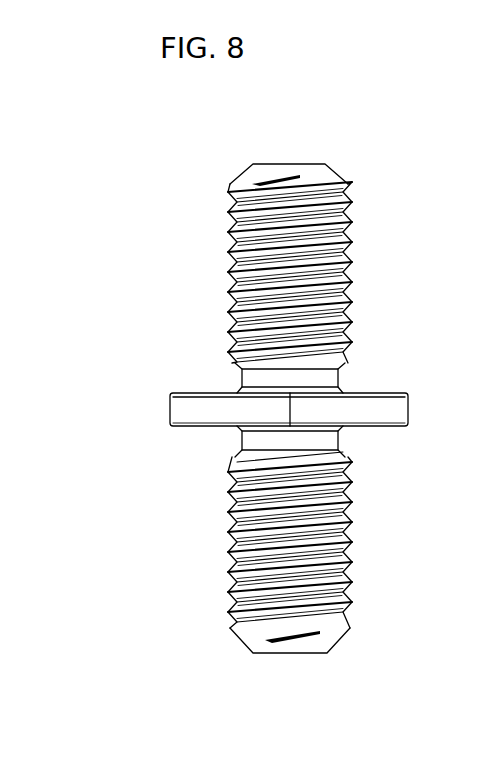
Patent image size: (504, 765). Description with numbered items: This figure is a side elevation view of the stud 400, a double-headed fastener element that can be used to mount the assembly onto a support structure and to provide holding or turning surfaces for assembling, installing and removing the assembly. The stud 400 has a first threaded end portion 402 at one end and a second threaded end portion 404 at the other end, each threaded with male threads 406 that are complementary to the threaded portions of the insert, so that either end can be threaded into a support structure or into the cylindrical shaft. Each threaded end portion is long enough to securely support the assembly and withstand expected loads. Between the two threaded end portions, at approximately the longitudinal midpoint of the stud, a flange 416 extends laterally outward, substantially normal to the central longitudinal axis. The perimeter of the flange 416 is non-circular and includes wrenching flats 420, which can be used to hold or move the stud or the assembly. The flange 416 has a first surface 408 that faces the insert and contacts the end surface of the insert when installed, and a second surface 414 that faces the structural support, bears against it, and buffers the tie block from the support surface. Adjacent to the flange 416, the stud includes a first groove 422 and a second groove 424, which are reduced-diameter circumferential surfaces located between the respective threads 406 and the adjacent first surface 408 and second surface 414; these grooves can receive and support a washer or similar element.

The stud 400 is at (268, 152).
The first threaded end portion 402 is at (310, 267).
The second threaded end portion 404 is at (305, 597).
The male threads 406 is at (233, 230).
The first surface 408 is at (383, 392).
The second surface 414 is at (378, 426).
The flange 416 is at (160, 408).
The wrenching flats 420 is at (383, 407).
The first groove 422 is at (230, 380).
The second groove 424 is at (230, 440).